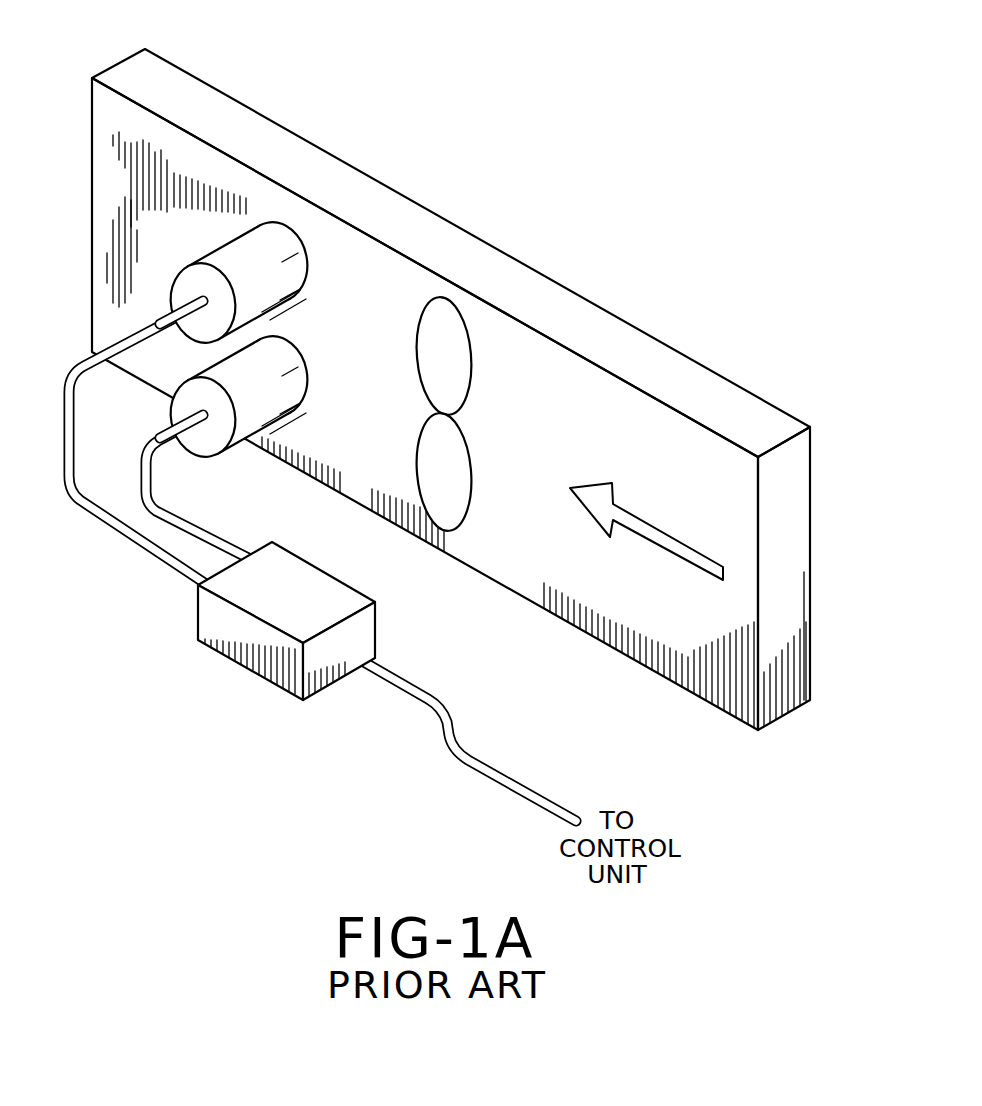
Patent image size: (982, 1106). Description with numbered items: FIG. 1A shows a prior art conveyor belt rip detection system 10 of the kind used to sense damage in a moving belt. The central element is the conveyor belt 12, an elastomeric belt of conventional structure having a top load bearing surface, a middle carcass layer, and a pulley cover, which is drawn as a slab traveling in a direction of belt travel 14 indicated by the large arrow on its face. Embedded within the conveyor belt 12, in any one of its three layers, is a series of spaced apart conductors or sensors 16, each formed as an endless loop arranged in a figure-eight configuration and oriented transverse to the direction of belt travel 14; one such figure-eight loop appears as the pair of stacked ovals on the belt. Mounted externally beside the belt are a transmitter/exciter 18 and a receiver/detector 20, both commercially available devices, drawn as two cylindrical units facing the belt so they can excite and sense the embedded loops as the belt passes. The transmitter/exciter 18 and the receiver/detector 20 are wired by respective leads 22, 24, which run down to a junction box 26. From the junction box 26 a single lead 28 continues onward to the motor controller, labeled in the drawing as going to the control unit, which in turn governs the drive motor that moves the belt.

The conveyor belt rip detection system 10 is at (603, 98).
The conveyor belt 12 is at (663, 358).
The direction of belt travel 14 is at (687, 542).
The conductors or sensors 16 is at (472, 350).
The transmitter/exciter 18 is at (185, 285).
The receiver/detector 20 is at (275, 383).
The lead 22 is at (70, 447).
The lead 24 is at (183, 520).
The junction box 26 is at (248, 635).
The lead 28 is at (437, 715).